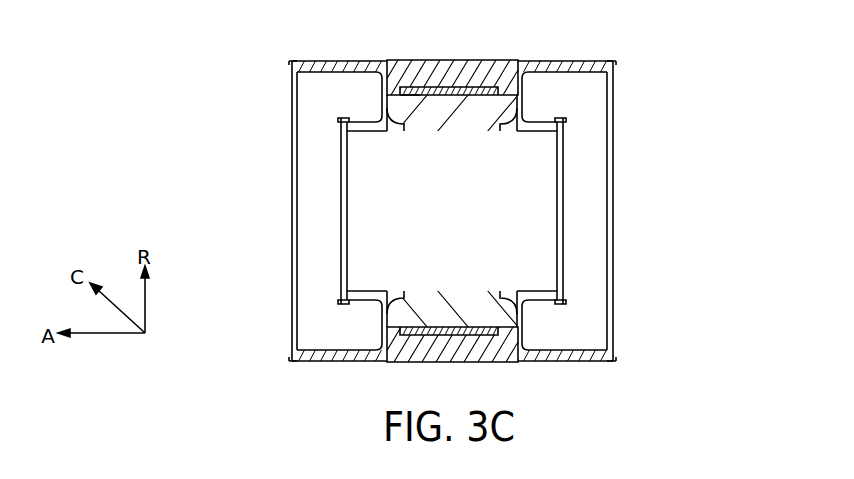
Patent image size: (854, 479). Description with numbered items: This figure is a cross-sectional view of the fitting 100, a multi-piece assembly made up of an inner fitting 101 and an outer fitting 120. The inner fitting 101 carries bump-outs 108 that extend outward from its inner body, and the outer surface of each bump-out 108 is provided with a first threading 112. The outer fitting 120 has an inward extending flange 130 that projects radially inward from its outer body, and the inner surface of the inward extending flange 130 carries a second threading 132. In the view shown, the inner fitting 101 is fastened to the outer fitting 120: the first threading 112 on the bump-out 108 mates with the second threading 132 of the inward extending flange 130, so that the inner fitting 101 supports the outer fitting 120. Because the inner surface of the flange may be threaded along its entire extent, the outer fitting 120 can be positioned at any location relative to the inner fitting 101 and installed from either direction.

The fitting 100 is at (150, 180).
The inner fitting 101 is at (358, 300).
The bump-outs 108 is at (457, 118).
The first threading 112 is at (418, 95).
The outer fitting 120 is at (314, 64).
The inward extending flange 130 is at (453, 67).
The second threading 132 is at (432, 88).